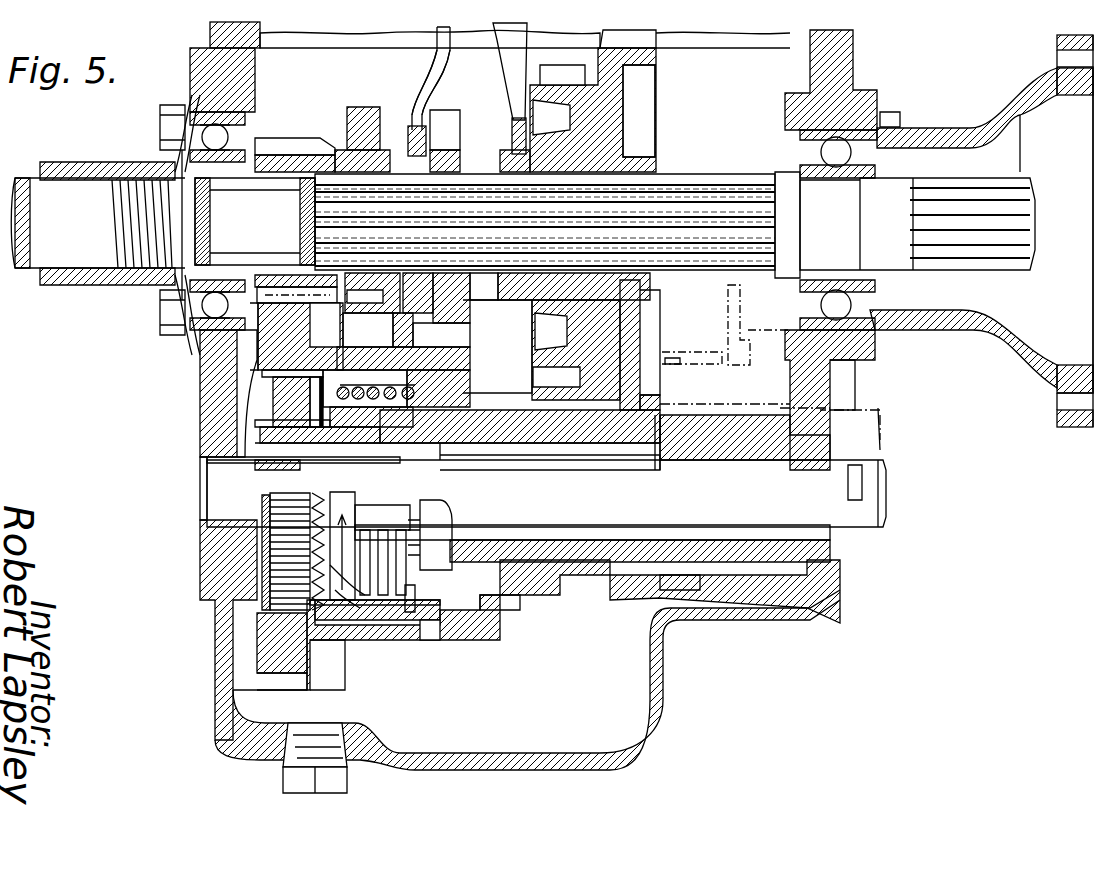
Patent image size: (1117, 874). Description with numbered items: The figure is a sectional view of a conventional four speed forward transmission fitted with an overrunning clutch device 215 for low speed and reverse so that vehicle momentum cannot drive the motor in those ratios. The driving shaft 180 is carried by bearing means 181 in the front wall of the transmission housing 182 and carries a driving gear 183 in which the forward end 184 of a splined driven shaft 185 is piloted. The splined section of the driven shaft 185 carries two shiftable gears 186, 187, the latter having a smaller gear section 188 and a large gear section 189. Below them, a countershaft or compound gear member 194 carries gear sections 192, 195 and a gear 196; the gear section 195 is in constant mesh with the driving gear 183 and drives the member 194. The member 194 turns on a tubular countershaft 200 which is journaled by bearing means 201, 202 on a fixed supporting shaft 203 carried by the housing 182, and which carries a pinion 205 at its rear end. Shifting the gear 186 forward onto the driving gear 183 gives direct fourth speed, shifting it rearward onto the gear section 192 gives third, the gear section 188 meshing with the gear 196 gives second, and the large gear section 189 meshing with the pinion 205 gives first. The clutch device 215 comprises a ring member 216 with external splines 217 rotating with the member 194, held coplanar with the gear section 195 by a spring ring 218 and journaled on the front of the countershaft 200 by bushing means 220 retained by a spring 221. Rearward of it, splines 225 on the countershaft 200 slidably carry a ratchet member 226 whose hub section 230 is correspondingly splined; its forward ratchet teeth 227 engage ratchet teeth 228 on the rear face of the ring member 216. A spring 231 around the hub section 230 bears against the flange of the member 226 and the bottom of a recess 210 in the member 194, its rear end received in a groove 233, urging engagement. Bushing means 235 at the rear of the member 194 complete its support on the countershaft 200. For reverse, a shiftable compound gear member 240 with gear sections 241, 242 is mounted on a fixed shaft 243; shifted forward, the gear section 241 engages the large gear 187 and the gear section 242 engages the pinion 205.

The driving shaft 180 is at (62, 252).
The bearing means 181 is at (205, 137).
The transmission housing 182 is at (205, 432).
The driving gear 183 is at (282, 145).
The forward end of splined driven shaft 184 is at (228, 222).
The splined driven shaft 185 is at (462, 178).
The shiftable gear 186 is at (378, 125).
The shiftable gear 187 is at (658, 96).
The smaller gear section 188 is at (535, 362).
The large gear section 189 is at (643, 392).
The gear section 192 is at (444, 668).
The countershaft or compound gear member 194 is at (356, 650).
The gear section 195 is at (282, 690).
The gear 196 is at (503, 612).
The tubular countershaft 200 is at (584, 571).
The bearing means 201 is at (203, 487).
The bearing means 202 is at (703, 457).
The fixed supporting shaft 203 is at (858, 522).
The pinion 205 is at (686, 578).
The recess 210 is at (332, 615).
The overrunning clutch device 215 is at (333, 362).
The ring member 216 is at (275, 410).
The external splines 217 is at (300, 470).
The spring ring 218 is at (268, 600).
The bushing means 220 is at (262, 462).
The spring 221 is at (290, 440).
The splines 225 is at (292, 448).
The ratchet member 226 is at (346, 500).
The ratchet teeth 227 is at (358, 590).
The ratchet teeth 228 is at (312, 405).
The hub section 230 is at (380, 510).
The spring 231 is at (368, 650).
The groove 233 is at (398, 615).
The bushing means 235 is at (492, 568).
The shiftable compound gear member 240 is at (698, 347).
The gear section 241 is at (683, 361).
The gear section 242 is at (760, 335).
The fixed shaft 243 is at (880, 412).